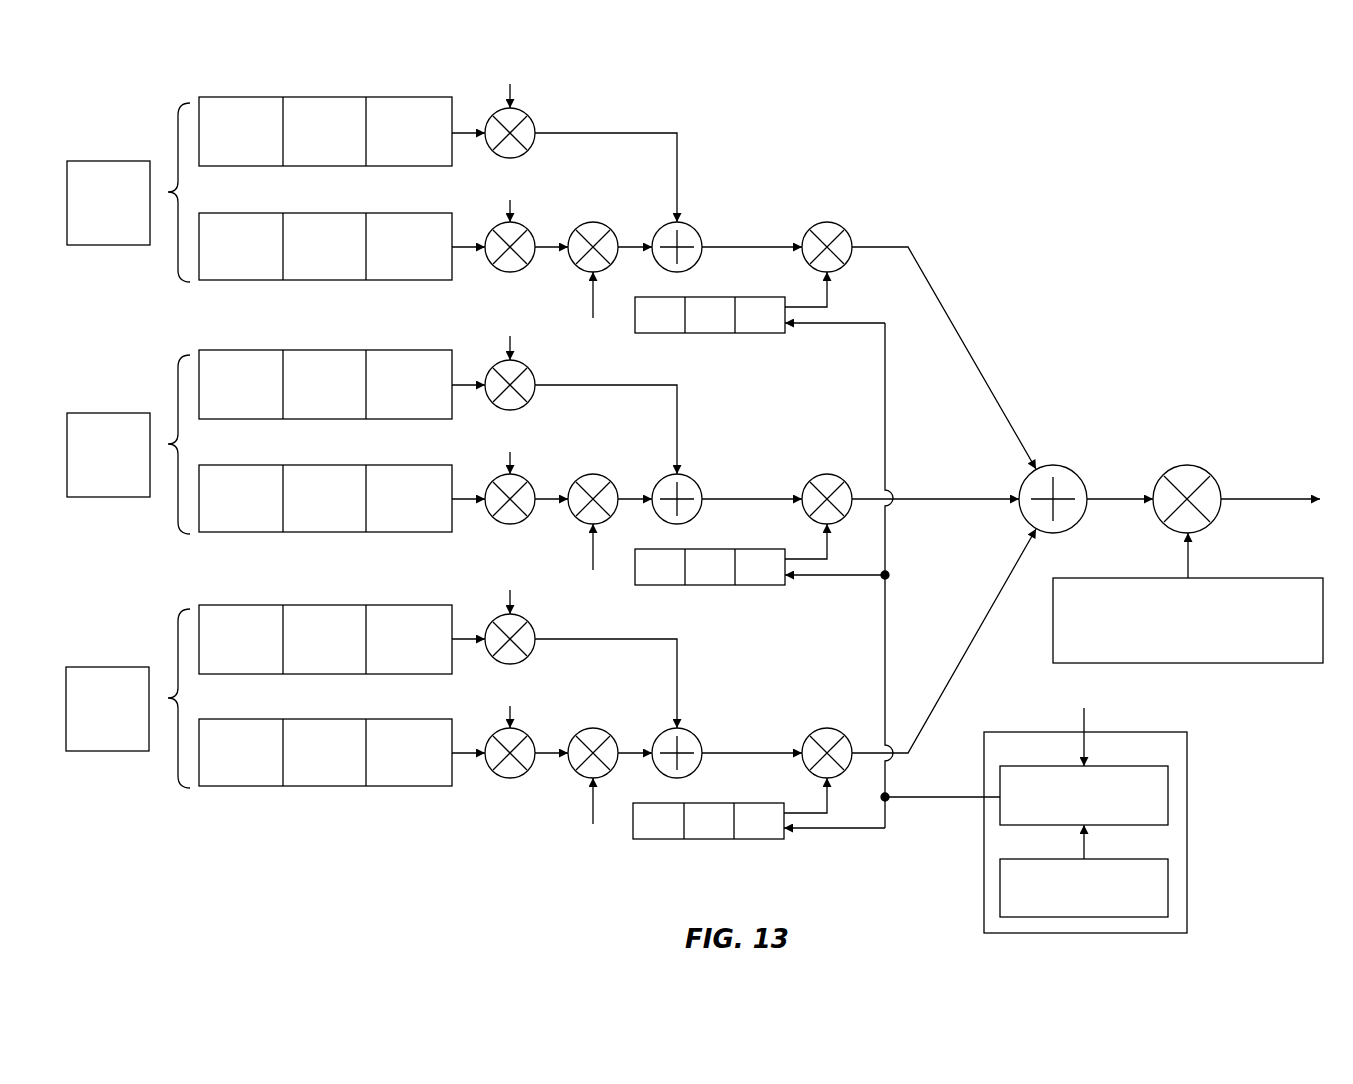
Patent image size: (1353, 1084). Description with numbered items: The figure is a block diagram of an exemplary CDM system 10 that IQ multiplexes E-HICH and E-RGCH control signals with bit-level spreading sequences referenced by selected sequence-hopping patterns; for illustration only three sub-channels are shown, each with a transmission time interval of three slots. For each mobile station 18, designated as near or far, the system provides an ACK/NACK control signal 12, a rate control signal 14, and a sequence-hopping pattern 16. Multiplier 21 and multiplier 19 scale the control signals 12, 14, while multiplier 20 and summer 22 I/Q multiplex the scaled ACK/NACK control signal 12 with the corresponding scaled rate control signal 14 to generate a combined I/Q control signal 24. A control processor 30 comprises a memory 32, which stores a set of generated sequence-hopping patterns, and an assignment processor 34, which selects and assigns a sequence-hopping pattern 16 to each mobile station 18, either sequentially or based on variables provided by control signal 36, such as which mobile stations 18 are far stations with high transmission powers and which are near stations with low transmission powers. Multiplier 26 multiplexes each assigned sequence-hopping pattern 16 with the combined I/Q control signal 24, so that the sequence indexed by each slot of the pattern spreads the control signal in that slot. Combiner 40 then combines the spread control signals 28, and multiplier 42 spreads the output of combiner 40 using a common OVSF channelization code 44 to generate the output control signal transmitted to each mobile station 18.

The CDM system 10 is at (1058, 209).
The ACK/NACK control signal 12 is at (376, 86).
The rate control signal 14 is at (318, 290).
The sequence-hopping pattern 16 is at (700, 346).
The mobile station 18 is at (115, 161).
The multiplier 19 is at (518, 270).
The multiplier 20 is at (603, 223).
The multiplier 21 is at (518, 157).
The summer 22 is at (687, 223).
The combined I/Q control signal 24 is at (727, 244).
The multiplier 26 is at (836, 224).
The spread control signal 28 is at (942, 302).
The control processor 30 is at (1155, 732).
The memory 32 is at (1170, 880).
The assignment processor 34 is at (1170, 778).
The control signal 36 is at (1083, 721).
The combiner 40 is at (1067, 464).
The multiplier 42 is at (1200, 464).
The common OVSF channelization code 44 is at (1283, 578).